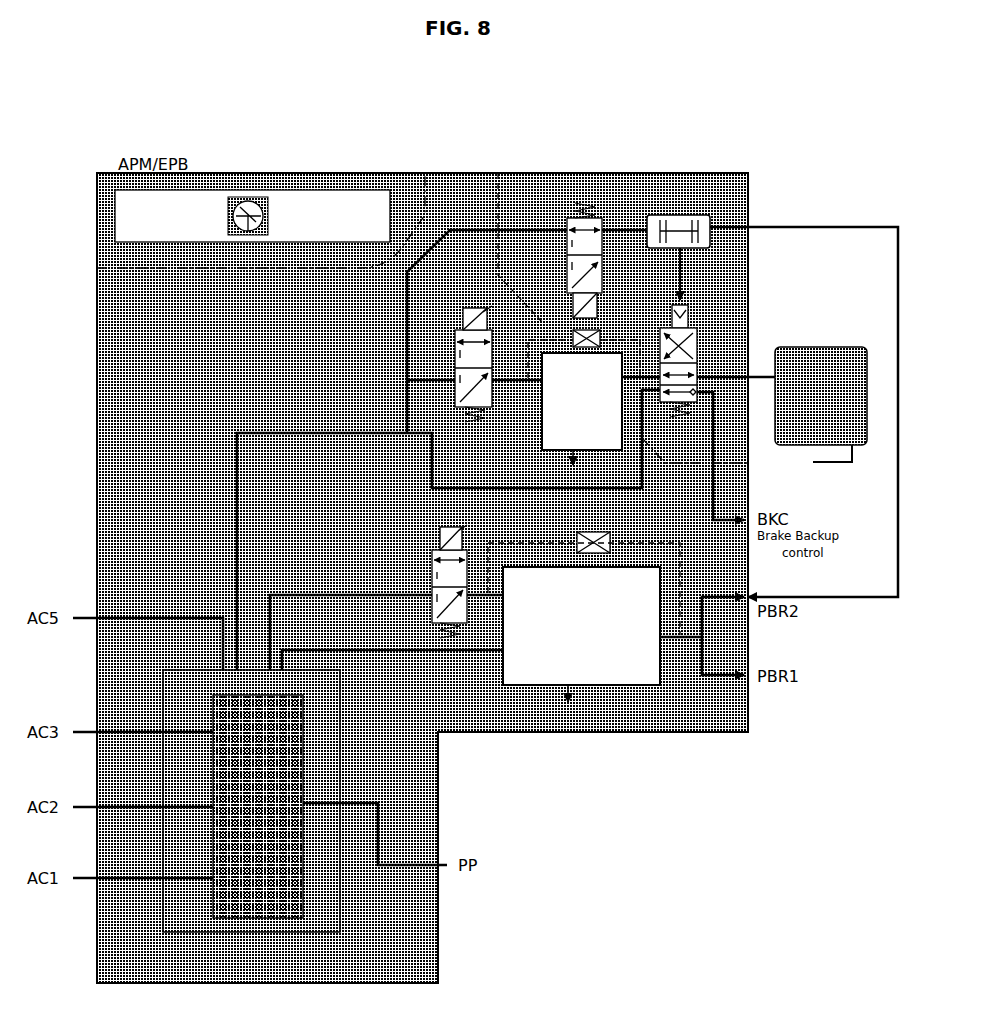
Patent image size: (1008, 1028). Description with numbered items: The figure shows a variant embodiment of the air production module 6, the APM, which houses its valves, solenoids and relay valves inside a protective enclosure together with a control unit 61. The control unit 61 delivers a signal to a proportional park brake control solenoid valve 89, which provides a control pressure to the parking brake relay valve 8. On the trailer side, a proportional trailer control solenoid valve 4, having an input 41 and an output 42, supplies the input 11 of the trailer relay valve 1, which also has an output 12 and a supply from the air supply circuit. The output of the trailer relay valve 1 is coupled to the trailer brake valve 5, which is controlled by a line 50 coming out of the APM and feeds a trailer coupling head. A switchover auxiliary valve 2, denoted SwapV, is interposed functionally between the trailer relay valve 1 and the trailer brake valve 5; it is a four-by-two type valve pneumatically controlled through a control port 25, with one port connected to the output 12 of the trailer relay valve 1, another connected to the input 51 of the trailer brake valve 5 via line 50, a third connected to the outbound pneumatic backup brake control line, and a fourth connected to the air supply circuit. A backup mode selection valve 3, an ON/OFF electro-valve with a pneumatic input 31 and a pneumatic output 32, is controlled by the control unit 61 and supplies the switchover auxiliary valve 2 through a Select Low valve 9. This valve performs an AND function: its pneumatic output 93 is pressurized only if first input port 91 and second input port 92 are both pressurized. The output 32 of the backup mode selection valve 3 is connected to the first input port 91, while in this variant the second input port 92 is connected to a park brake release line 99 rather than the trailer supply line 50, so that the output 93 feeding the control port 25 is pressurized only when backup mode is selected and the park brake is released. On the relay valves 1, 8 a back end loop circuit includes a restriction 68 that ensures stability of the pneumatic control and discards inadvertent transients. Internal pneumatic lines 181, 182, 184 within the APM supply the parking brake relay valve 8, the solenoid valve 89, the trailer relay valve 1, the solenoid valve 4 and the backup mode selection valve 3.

The control unit 61 is at (317, 190).
The air production module 6 is at (493, 168).
The Select Low valve 9 is at (647, 218).
The first input port 91 is at (640, 226).
The second input port 92 is at (722, 226).
The pneumatic output 93 is at (684, 250).
The backup mode selection valve 3 is at (560, 258).
The pneumatic input 31 is at (567, 235).
The pneumatic output 32 is at (603, 238).
The proportional trailer control solenoid valve 4 is at (496, 349).
The input 41 is at (455, 380).
The output 42 is at (503, 419).
The input 11 is at (535, 383).
The internal pneumatic line 184 is at (448, 530).
The trailer relay valve 1 is at (617, 350).
The restriction 68 is at (573, 334).
The switchover auxiliary valve 2 is at (700, 350).
The control port 25 is at (690, 300).
The line 50 is at (765, 372).
The input 51 is at (775, 381).
The trailer brake valve 5 is at (844, 343).
The output 12 is at (625, 383).
The parking brake relay valve 8 is at (632, 562).
The proportional park brake control solenoid valve 89 is at (428, 559).
The internal pneumatic line 182 is at (351, 622).
The internal pneumatic line 181 is at (392, 650).
The park brake release line 99 is at (850, 600).